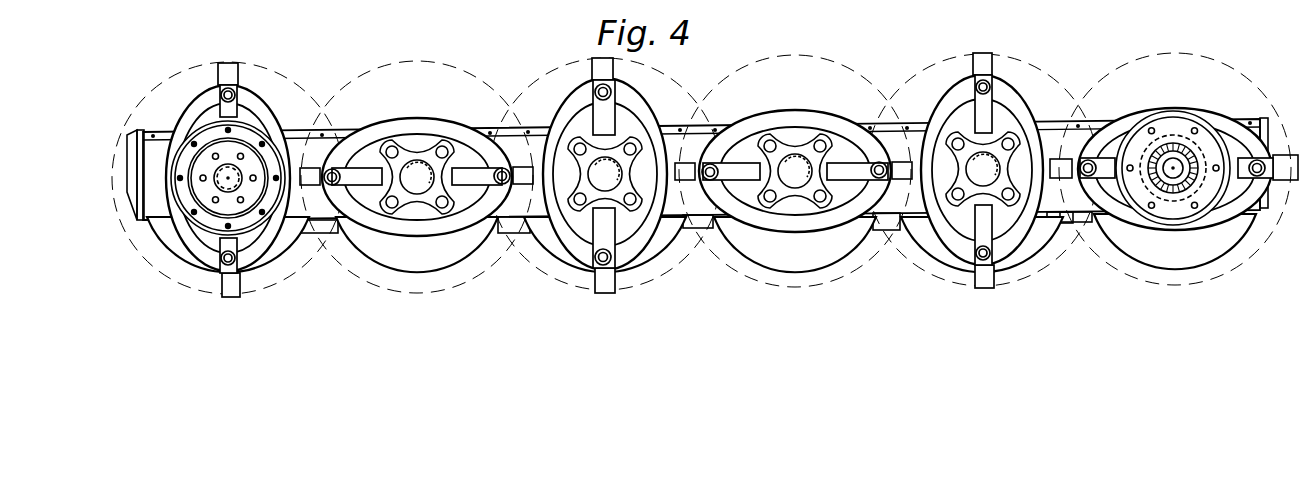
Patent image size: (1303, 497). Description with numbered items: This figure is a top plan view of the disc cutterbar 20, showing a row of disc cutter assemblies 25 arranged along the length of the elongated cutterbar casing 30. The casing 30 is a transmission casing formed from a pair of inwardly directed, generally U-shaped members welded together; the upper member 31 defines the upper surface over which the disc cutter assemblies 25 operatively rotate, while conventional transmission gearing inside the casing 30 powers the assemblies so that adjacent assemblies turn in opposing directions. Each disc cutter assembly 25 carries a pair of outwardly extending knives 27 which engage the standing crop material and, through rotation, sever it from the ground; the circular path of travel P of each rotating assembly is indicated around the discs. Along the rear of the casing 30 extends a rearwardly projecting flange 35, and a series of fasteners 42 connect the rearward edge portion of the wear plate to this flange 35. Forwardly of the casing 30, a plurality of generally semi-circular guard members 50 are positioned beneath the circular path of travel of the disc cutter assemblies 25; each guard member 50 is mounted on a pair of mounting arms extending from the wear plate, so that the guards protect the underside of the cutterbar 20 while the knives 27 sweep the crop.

The disc cutterbar 20 is at (712, 188).
The disc cutter assembly 25 is at (632, 102).
The knife 27 is at (228, 73).
The cutterbar casing 30 is at (322, 150).
The upper member 31 is at (513, 147).
The flange 35 is at (300, 130).
The fastener 42 is at (905, 130).
The guard member 50 is at (403, 262).
The path of disc P is at (468, 282).